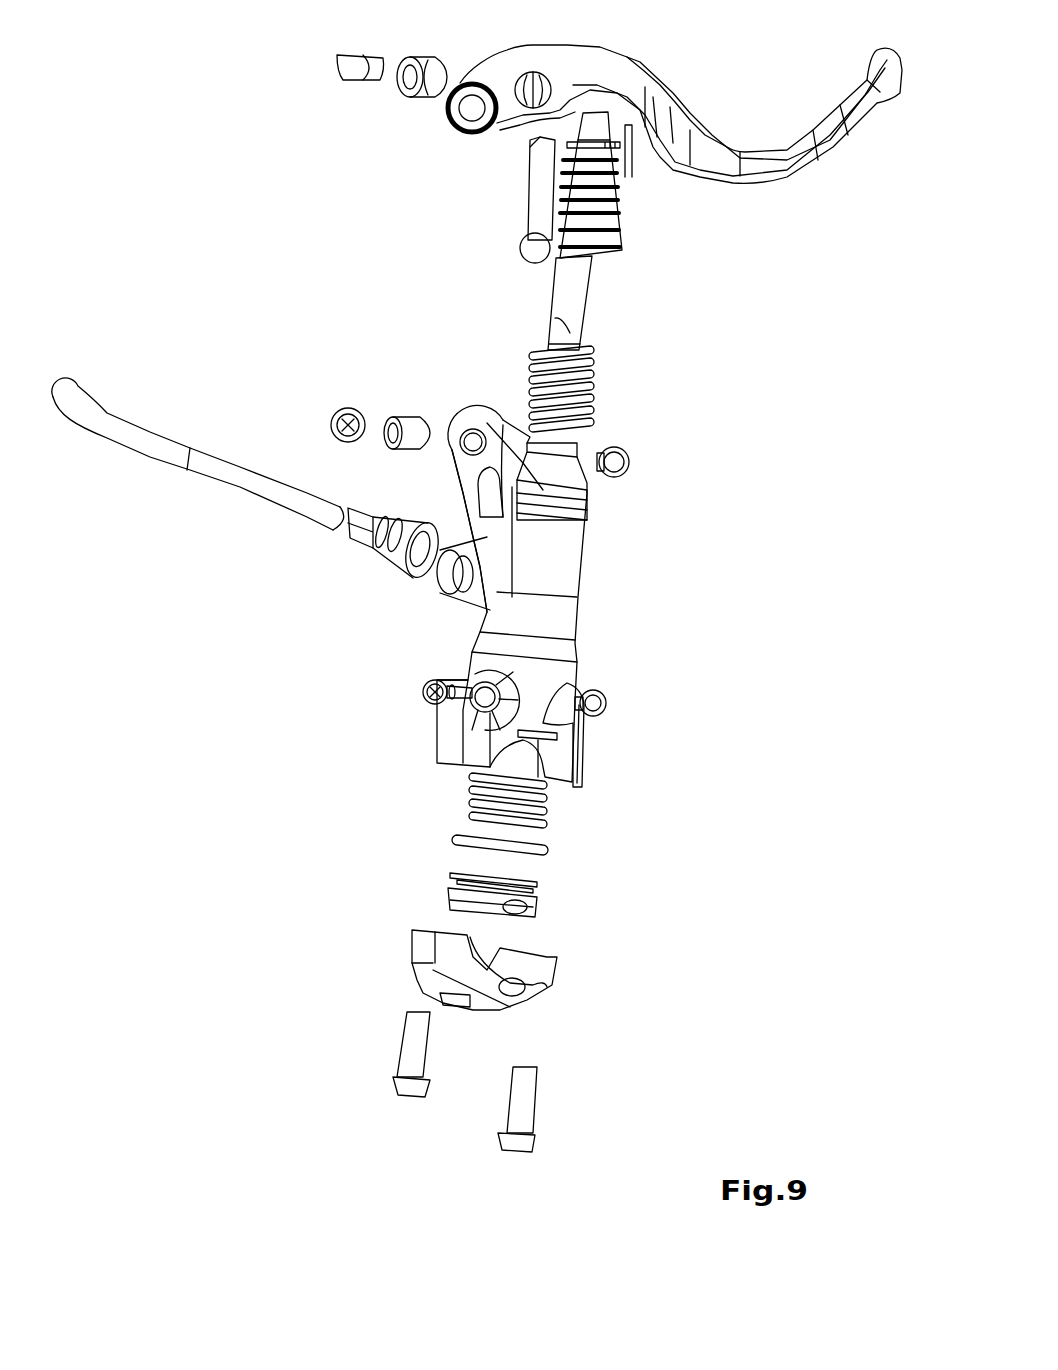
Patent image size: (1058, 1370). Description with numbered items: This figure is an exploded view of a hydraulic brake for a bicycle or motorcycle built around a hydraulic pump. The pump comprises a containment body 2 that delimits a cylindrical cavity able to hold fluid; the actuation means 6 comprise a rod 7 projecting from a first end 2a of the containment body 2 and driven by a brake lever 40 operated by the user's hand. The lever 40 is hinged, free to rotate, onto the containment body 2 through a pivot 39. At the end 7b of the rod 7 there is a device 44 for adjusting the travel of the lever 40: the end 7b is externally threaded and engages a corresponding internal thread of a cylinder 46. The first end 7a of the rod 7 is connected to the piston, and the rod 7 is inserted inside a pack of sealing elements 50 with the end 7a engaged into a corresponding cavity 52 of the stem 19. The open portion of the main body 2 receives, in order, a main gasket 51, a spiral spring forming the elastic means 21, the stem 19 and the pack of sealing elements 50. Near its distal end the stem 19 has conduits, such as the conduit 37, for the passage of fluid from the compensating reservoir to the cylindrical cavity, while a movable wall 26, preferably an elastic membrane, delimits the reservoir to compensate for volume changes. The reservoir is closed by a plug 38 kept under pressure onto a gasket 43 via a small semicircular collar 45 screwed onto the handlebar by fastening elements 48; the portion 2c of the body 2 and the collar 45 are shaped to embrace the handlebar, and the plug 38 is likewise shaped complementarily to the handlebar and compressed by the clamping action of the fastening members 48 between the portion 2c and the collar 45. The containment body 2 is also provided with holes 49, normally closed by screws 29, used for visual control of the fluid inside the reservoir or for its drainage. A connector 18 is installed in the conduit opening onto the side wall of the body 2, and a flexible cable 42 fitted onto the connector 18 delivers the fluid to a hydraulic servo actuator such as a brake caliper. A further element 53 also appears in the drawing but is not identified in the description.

The containment body 2 is at (573, 622).
The first end of the containment body 2a is at (545, 495).
The portion of the containment body 2c is at (574, 787).
The actuation means 6 is at (447, 130).
The rod 7 is at (540, 200).
The first end of the rod 7a is at (540, 247).
The end of the rod 7b is at (535, 143).
The connector 18 is at (347, 540).
The stem 19 is at (577, 303).
The elastic means 21 is at (590, 398).
The movable wall 26 is at (477, 792).
The screws 29 is at (423, 685).
The conduit 37 is at (570, 333).
The plug 38 is at (467, 898).
The pivot 39 is at (340, 410).
The lever 40 is at (833, 130).
The flexible cable 42 is at (167, 448).
The gasket 43 is at (457, 840).
The adjusting device 44 is at (365, 45).
The small collar 45 is at (530, 1017).
The cylinder 46 is at (445, 78).
The fastening members 48 is at (527, 1122).
The holes 49 is at (473, 677).
The pack of sealing elements 50 is at (640, 213).
The main gasket 51 is at (593, 477).
The cavity of the stem 52 is at (615, 255).
The sleeve 53 is at (463, 423).